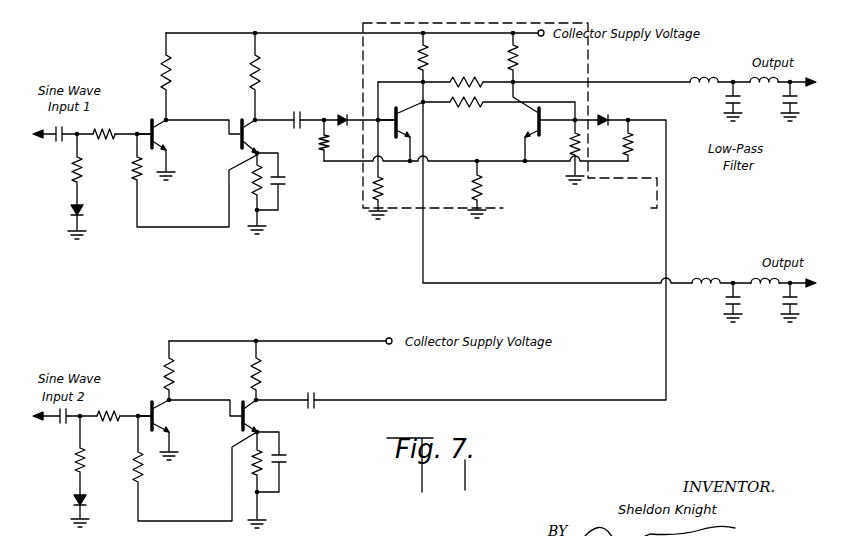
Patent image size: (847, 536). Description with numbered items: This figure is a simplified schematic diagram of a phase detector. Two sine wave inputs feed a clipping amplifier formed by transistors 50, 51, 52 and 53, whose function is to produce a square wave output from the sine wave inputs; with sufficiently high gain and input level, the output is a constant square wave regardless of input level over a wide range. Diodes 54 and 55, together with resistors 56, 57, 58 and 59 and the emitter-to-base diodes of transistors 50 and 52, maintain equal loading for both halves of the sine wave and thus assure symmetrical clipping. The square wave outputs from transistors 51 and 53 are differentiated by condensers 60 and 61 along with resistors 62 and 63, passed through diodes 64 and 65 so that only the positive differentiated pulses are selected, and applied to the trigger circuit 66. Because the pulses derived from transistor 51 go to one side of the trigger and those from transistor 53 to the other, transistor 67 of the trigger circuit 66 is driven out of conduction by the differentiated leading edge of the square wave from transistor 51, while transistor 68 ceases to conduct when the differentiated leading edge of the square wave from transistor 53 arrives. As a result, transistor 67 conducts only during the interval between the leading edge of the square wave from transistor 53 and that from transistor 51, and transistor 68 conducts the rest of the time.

The transistor 50 is at (152, 120).
The transistor 51 is at (242, 120).
The transistor 52 is at (152, 403).
The transistor 53 is at (243, 403).
The diode 54 is at (84, 209).
The diode 55 is at (86, 500).
The resistor 56 is at (84, 177).
The resistor 57 is at (110, 130).
The resistor 58 is at (86, 462).
The resistor 59 is at (115, 421).
The condenser 60 is at (296, 112).
The condenser 61 is at (312, 393).
The resistor 62 is at (331, 143).
The resistor 63 is at (630, 145).
The diode 64 is at (604, 116).
The diode 65 is at (343, 115).
The trigger circuit 66 is at (510, 119).
The transistor 67 is at (394, 110).
The transistor 68 is at (528, 119).